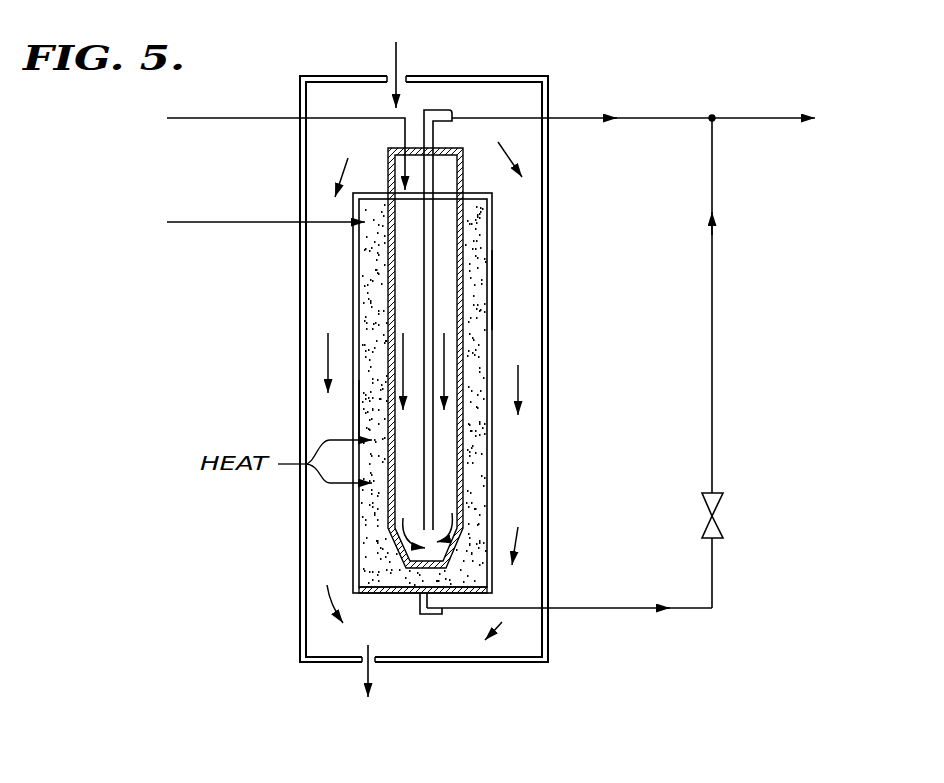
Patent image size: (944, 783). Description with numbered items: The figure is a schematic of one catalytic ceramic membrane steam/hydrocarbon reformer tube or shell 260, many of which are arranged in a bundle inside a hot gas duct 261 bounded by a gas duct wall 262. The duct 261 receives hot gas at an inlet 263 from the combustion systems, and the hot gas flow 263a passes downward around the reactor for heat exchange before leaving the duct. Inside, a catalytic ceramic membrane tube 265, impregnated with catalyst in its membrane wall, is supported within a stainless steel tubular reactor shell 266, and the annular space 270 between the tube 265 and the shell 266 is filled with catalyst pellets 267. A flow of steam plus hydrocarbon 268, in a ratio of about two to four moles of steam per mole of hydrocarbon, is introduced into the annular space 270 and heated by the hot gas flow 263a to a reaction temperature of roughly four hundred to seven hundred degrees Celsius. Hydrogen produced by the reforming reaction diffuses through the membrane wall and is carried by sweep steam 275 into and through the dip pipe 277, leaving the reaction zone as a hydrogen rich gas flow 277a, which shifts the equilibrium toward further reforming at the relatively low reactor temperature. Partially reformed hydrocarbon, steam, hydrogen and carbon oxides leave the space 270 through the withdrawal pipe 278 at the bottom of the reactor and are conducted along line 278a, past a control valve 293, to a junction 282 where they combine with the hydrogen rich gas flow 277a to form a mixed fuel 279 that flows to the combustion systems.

The tube or shell 260 is at (492, 440).
The hot gas duct 261 is at (433, 640).
The gas duct wall 262 is at (300, 540).
The hot gas inlet 263 is at (398, 56).
The hot gas flow 263a is at (328, 356).
The catalytic ceramic membrane tube 265 is at (463, 335).
The tubular reactor shell 266 is at (492, 290).
The catalyst pellets 267 is at (470, 478).
The flow of steam plus hydrocarbon 268 is at (199, 222).
The annular space 270 is at (359, 412).
The sweep steam 275 is at (248, 118).
The dip pipe 277 is at (433, 250).
The hydrogen rich gas flow 277a is at (640, 118).
The withdrawal pipe 278 is at (440, 613).
The withdrawal line 278a is at (612, 610).
The mixed fuel 279 is at (760, 120).
The combining point 282 is at (712, 118).
The control valve 293 is at (723, 528).